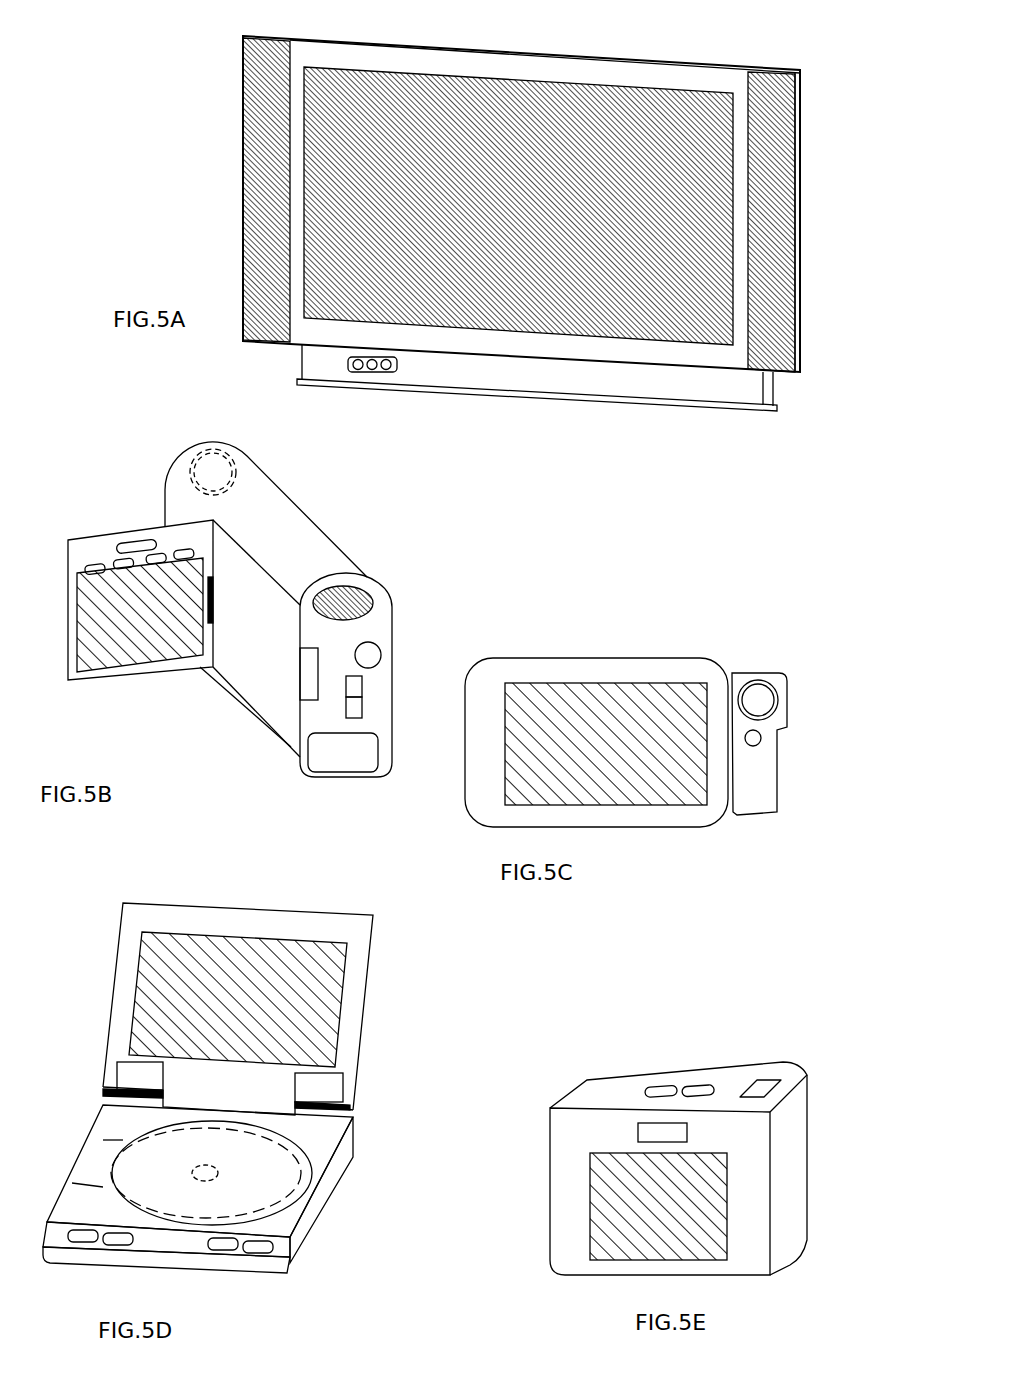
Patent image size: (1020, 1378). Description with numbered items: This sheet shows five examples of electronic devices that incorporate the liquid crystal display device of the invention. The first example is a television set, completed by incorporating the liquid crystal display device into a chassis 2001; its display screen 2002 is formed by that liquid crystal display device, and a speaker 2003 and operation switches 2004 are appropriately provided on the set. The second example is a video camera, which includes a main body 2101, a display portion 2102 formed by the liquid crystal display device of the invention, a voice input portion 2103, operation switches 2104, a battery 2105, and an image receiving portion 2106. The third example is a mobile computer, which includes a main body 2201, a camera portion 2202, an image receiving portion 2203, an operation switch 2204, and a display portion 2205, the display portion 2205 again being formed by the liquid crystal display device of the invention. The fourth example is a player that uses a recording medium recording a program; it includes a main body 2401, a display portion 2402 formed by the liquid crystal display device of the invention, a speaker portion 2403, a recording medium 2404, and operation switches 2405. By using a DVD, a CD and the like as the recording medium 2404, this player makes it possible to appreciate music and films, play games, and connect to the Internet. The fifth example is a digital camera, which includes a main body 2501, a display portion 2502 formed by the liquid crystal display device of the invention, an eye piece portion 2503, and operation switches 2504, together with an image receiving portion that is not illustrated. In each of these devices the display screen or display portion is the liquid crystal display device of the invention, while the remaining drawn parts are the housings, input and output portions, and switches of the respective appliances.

In FIG. 5A, the chassis 2001 is at (687, 350).
In FIG. 5A, the display screen 2002 is at (320, 178).
In FIG. 5A, the speaker 2003 is at (266, 170).
In FIG. 5A, the operation switches 2004 is at (373, 372).
In FIG. 5B, the main body 2101 is at (270, 513).
In FIG. 5B, the display portion 2102 is at (131, 645).
In FIG. 5B, the voice input portion 2103 is at (353, 603).
In FIG. 5B, the operation switches 2104 is at (93, 562).
In FIG. 5B, the battery 2105 is at (330, 752).
In FIG. 5B, the image receiving portion 2106 is at (212, 447).
In FIG. 5C, the main body 2201 is at (515, 670).
In FIG. 5C, the camera portion 2202 is at (788, 673).
In FIG. 5C, the image receiving portion 2203 is at (760, 700).
In FIG. 5C, the operation switch 2204 is at (753, 747).
In FIG. 5C, the display portion 2205 is at (595, 705).
In FIG. 5D, the main body 2401 is at (268, 927).
In FIG. 5D, the display portion 2402 is at (225, 982).
In FIG. 5D, the speaker portion 2403 is at (322, 1090).
In FIG. 5D, the recording medium 2404 is at (267, 1190).
In FIG. 5D, the operation switches 2405 is at (270, 1245).
In FIG. 5E, the main body 2501 is at (582, 1098).
In FIG. 5E, the display portion 2502 is at (620, 1200).
In FIG. 5E, the eye piece portion 2503 is at (650, 1137).
In FIG. 5E, the operation switches 2504 is at (762, 1083).